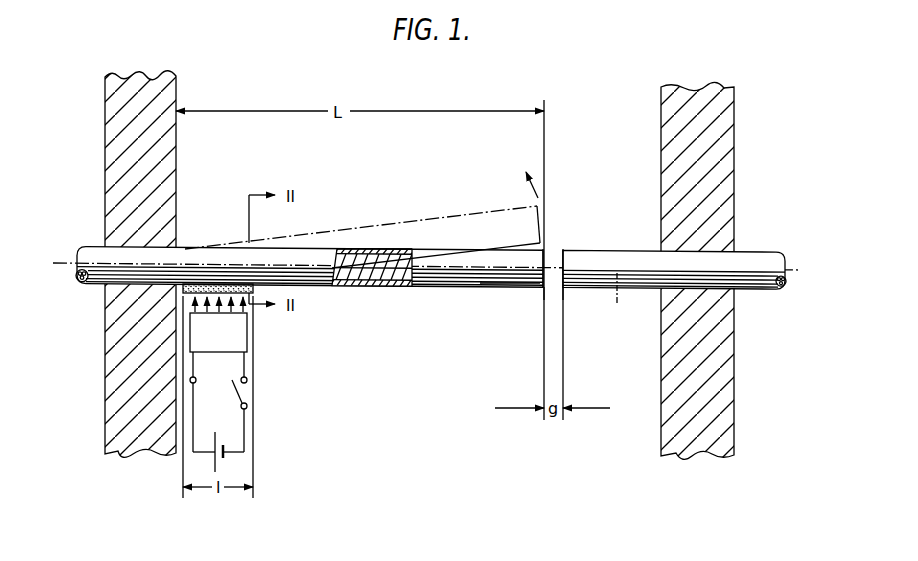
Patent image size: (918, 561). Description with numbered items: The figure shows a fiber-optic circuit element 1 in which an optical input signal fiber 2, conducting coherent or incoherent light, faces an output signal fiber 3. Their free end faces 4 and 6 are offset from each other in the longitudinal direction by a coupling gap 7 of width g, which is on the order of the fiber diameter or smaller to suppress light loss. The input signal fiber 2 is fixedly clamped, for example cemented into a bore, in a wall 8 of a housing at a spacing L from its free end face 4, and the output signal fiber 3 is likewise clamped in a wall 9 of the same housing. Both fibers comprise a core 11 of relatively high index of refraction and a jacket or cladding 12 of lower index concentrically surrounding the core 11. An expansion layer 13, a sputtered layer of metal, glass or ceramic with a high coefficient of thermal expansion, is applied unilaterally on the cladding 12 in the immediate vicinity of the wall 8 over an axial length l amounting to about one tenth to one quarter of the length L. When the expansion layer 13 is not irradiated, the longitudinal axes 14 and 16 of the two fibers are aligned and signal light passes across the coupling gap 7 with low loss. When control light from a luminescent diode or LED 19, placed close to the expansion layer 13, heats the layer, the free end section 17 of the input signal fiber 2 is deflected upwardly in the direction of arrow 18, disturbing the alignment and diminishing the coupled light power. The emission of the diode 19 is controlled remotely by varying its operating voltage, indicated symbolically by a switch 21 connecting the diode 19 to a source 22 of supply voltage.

The fiber-optic circuit element 1 is at (357, 392).
The input signal fiber 2 is at (314, 253).
The output signal fiber 3 is at (643, 256).
The free end face 4 is at (548, 250).
The free end face 6 is at (560, 250).
The coupling gap 7 is at (553, 250).
The wall 8 is at (162, 156).
The wall 9 is at (663, 155).
The core 11 is at (393, 250).
The jacket or cladding 12 is at (373, 286).
The expansion layer 13 is at (213, 284).
The longitudinal axis 14 is at (74, 278).
The longitudinal axis 16 is at (619, 300).
The free end section 17 is at (526, 278).
The arrow 18 is at (536, 194).
The luminescent diode or LED 19 is at (248, 339).
The switch 21 is at (247, 392).
The source of supply voltage 22 is at (215, 433).